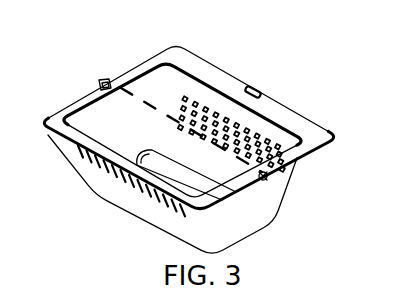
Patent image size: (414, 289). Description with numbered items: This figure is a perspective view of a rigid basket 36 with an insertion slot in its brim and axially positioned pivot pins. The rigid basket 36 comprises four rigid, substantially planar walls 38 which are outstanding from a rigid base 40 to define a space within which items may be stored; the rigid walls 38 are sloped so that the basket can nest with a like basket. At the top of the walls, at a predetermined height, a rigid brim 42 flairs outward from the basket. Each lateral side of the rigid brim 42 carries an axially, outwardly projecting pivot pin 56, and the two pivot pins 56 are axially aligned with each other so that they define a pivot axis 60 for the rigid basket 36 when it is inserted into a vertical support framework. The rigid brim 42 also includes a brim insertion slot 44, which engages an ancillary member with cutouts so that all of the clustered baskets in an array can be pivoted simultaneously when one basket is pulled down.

The rigid basket 36 is at (148, 58).
The rigid wall 38 is at (120, 115).
The rigid base 40 is at (172, 175).
The rigid brim 42 is at (208, 62).
The brim insertion slot 44 is at (263, 91).
The pivot pin with flange 56 is at (268, 178).
The pivot axis 60 is at (137, 100).